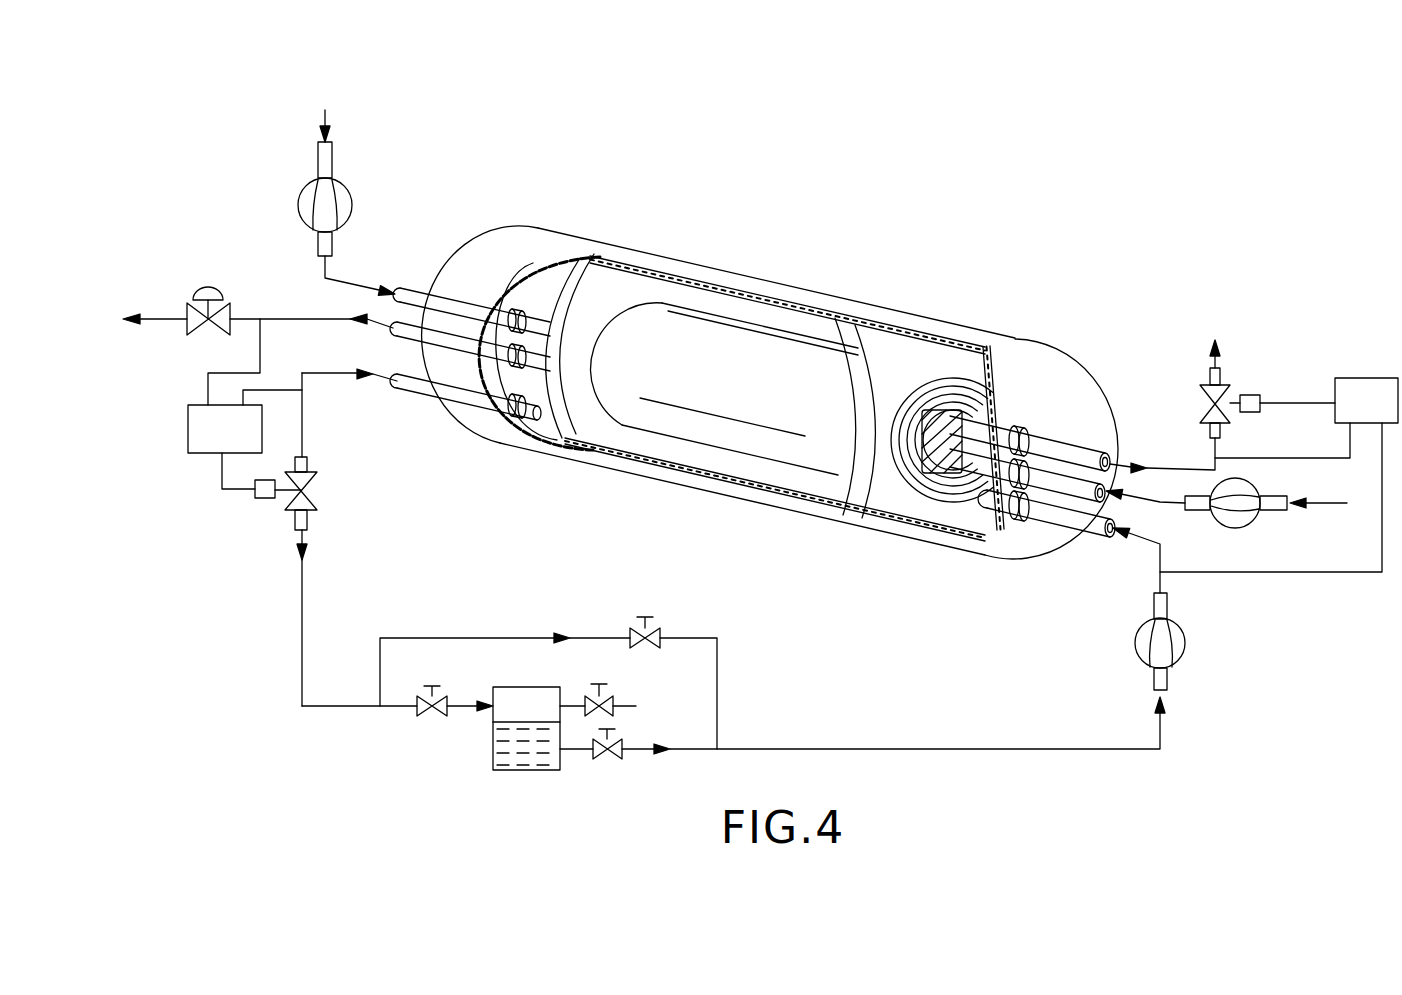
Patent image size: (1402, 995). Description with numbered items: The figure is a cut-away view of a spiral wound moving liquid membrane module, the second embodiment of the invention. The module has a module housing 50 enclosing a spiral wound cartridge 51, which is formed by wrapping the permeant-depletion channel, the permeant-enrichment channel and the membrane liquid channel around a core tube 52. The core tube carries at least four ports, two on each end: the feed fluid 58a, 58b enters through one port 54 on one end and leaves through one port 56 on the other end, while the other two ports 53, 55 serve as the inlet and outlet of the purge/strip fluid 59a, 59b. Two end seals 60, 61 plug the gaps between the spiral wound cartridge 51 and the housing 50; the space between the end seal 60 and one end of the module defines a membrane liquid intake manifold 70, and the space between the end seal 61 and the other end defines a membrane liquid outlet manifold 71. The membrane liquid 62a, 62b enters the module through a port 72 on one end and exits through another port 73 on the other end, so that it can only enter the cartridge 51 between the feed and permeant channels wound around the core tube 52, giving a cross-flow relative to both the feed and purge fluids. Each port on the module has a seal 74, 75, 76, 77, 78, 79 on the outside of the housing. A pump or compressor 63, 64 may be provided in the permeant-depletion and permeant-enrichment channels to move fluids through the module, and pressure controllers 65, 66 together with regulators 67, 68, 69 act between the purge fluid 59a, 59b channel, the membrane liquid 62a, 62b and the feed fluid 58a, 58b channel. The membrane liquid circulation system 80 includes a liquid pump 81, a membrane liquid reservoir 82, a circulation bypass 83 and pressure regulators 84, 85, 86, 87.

The module housing 50 is at (741, 277).
The spiral wound cartridge 51 is at (790, 357).
The core tube 52 is at (947, 413).
The port 53 is at (1042, 440).
The port 54 is at (1082, 482).
The port 55 is at (417, 285).
The port 56 is at (398, 290).
The feed fluid 58a is at (1323, 519).
The feed fluid 58b is at (127, 318).
The purge/strip fluid 59a is at (332, 109).
The purge/strip fluid 59b is at (1222, 336).
The end seal 60 is at (842, 437).
The end seal 61 is at (556, 414).
The membrane liquid 62a is at (1130, 550).
The membrane liquid 62b is at (362, 377).
The pump or compressor 63 is at (1218, 522).
The pump or compressor 64 is at (300, 193).
The pressure controller 65 is at (1367, 378).
The pressure controller 66 is at (187, 423).
The regulator 67 is at (192, 301).
The regulator 68 is at (252, 502).
The regulator 69 is at (1222, 437).
The membrane liquid intake manifold 70 is at (962, 513).
The membrane liquid outlet manifold 71 is at (535, 290).
The port 72 is at (1067, 520).
The port 73 is at (427, 397).
The seal 74 is at (1020, 520).
The seal 75 is at (1013, 487).
The seal 76 is at (1027, 423).
The seal 77 is at (503, 313).
The seal 78 is at (493, 398).
The seal 79 is at (514, 414).
The membrane liquid circulation system 80 is at (765, 750).
The liquid pump 81 is at (1190, 640).
The membrane liquid reservoir 82 is at (493, 752).
The circulation bypass 83 is at (503, 638).
The pressure regulator 84 is at (435, 685).
The pressure regulator 85 is at (647, 628).
The pressure regulator 86 is at (598, 684).
The pressure regulator 87 is at (617, 733).